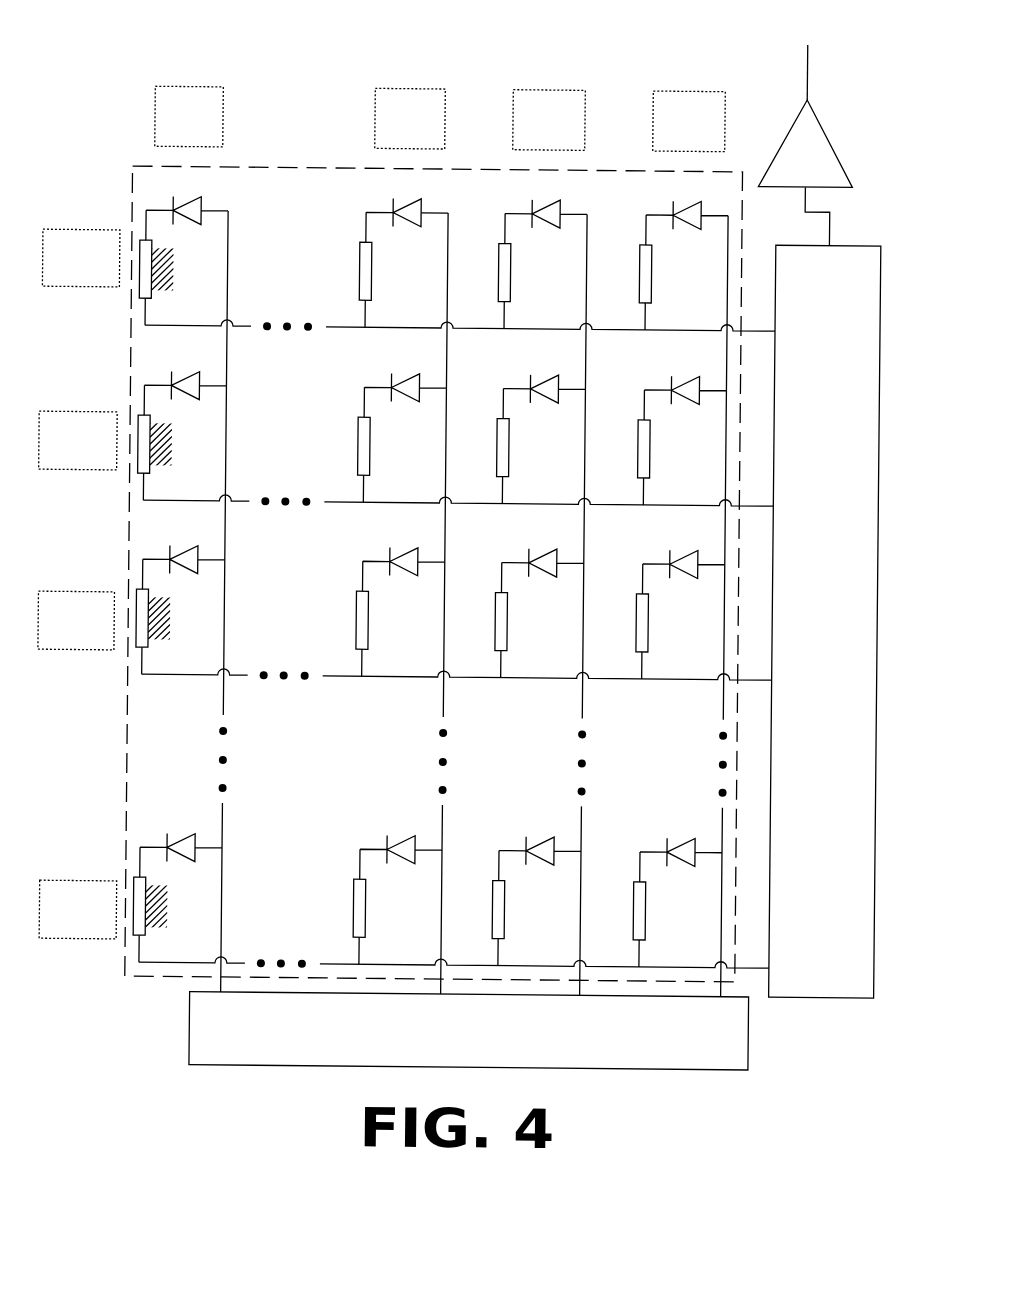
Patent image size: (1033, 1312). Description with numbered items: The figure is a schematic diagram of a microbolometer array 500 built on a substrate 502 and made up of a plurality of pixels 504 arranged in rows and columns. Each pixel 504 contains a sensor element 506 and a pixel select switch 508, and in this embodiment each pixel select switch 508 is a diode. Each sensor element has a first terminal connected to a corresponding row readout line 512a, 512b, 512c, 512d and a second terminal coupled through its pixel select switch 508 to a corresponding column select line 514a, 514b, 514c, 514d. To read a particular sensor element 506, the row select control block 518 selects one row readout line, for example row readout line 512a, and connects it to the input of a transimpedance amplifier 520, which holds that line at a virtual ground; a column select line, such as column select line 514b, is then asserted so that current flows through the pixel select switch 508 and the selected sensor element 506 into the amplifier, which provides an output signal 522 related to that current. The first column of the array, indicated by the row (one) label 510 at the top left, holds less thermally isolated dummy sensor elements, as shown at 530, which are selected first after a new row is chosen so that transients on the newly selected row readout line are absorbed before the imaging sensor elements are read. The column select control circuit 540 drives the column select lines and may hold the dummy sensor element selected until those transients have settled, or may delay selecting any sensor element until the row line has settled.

The microbolometer array 500 is at (177, 58).
The substrate 502 is at (131, 203).
The pixel 504 is at (297, 259).
The sensor element 506 is at (359, 279).
The pixel select switch 508 is at (443, 197).
The row (1) line 510 is at (99, 291).
The row readout line 512a is at (674, 328).
The row readout line 512b is at (675, 503).
The row readout line 512c is at (683, 677).
The row readout line 512d is at (675, 965).
The column select line 514a is at (227, 532).
The column select line 514b is at (447, 525).
The column select line 514c is at (587, 533).
The column select line 514d is at (727, 533).
The row select control block 518 is at (851, 994).
The transimpedance amplifier 520 is at (827, 139).
The output signal 522 is at (806, 70).
The dummy sensor element 530 is at (140, 296).
The column select control circuit 540 is at (715, 1066).